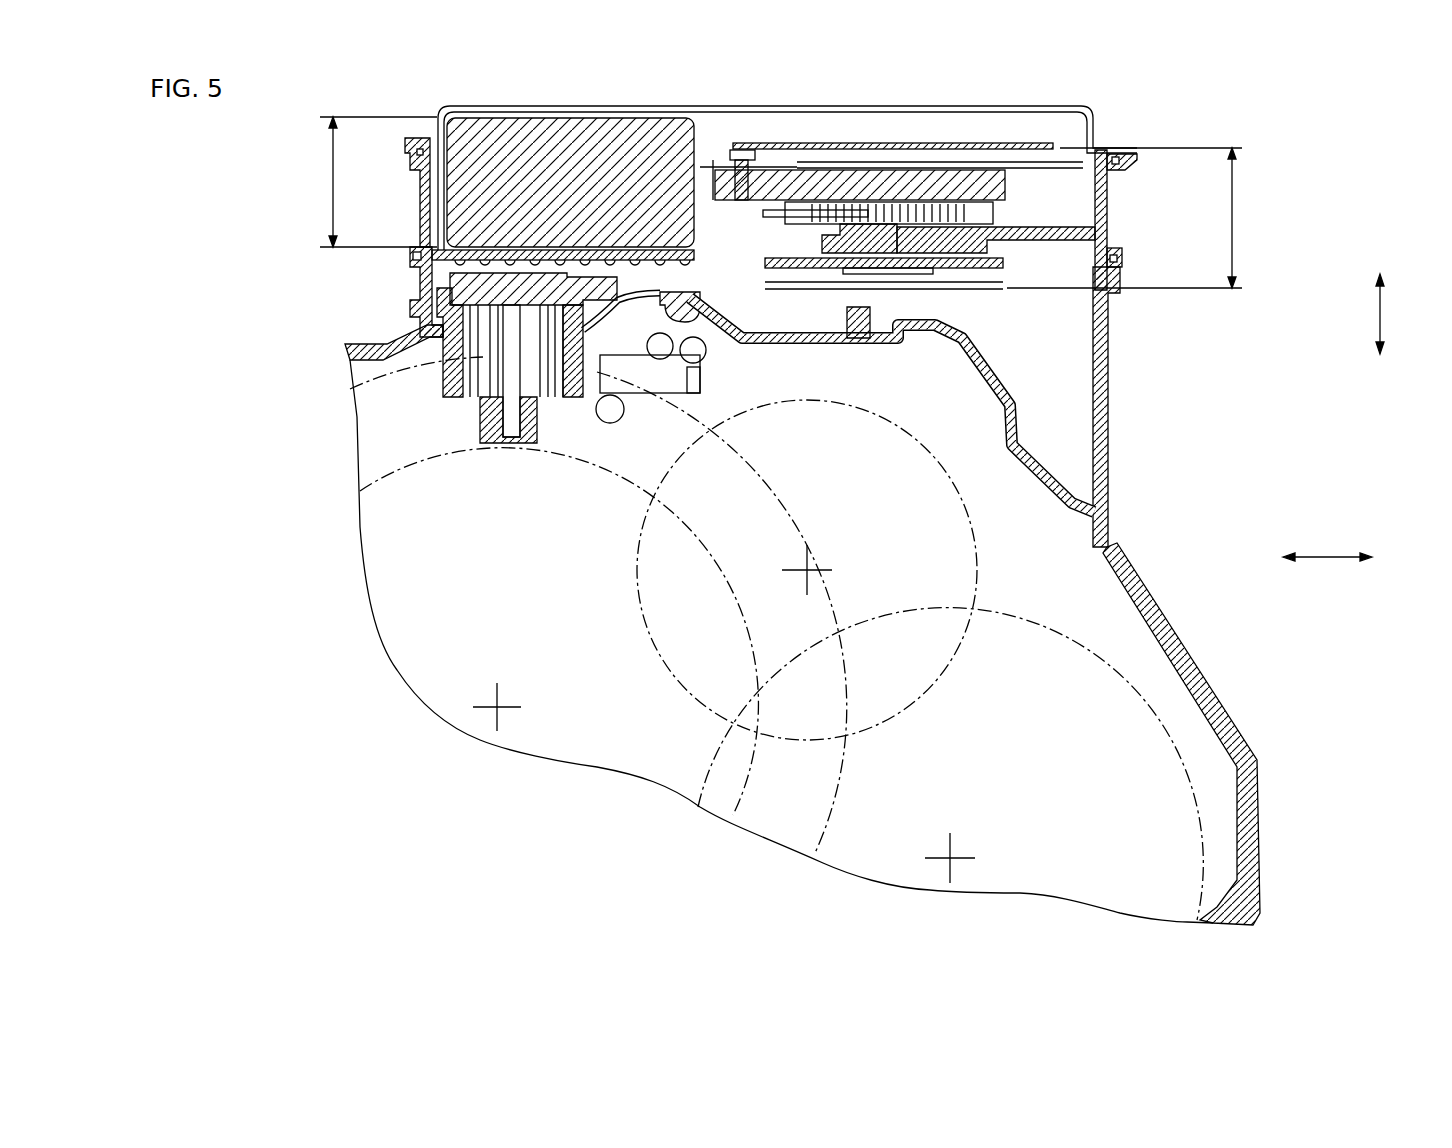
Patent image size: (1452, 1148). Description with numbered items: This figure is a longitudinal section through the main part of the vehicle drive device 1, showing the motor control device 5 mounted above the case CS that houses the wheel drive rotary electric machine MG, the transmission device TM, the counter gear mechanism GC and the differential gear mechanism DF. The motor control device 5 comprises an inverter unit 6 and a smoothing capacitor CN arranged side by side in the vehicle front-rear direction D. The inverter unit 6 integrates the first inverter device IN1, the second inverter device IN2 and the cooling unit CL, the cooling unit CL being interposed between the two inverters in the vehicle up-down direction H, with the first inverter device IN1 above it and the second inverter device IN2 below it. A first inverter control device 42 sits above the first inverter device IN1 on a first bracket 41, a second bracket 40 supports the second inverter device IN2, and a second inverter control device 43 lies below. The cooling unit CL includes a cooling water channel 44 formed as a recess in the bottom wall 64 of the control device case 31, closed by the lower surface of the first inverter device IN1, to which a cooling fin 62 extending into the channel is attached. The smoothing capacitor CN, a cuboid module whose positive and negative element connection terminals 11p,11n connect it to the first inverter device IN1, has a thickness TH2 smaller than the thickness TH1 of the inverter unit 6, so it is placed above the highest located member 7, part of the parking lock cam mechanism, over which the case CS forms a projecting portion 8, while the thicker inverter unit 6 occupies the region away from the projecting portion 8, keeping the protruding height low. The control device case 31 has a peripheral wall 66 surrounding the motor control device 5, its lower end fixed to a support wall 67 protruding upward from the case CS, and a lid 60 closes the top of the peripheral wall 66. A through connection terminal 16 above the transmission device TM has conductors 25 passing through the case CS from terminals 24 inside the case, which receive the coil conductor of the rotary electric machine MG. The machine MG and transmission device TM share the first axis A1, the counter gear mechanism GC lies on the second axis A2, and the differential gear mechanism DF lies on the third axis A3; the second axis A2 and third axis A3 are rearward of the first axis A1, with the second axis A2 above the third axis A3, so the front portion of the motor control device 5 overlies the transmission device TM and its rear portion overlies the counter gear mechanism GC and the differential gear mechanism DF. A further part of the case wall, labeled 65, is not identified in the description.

The vehicle drive device 1 is at (1128, 120).
The motor control device 5 is at (735, 108).
The inverter unit 6 is at (968, 138).
The highest located member 7 is at (712, 377).
The projecting portion 8 is at (668, 292).
The positive and negative element connection terminals 11p,11n is at (713, 162).
The through connection terminal 16 is at (447, 277).
The terminals 24 is at (516, 443).
The conductors 25 is at (557, 323).
The control device case 31 is at (1108, 203).
The second bracket 40 is at (1003, 270).
The first bracket 41 is at (1037, 167).
The first inverter control device 42 is at (908, 143).
The second inverter control device 43 is at (815, 283).
The cooling water channel 44 is at (833, 238).
The lid 60 is at (1067, 110).
The cooling fin 62 is at (993, 213).
The bottom wall 64 is at (627, 262).
The partition wall 65 is at (737, 260).
The peripheral wall 66 is at (418, 197).
The support wall 67 is at (413, 300).
The smoothing capacitor CN is at (547, 118).
The first inverter device IN1 is at (770, 177).
The second inverter device IN2 is at (897, 270).
The cooling unit CL is at (912, 242).
The wheel drive rotary electric machine MG is at (352, 372).
The transmission device TM is at (375, 480).
The counter gear mechanism GC is at (910, 437).
The differential gear mechanism DF is at (1025, 605).
The case CS is at (1197, 637).
The first axis A1 is at (497, 707).
The second axis A2 is at (807, 570).
The third axis A3 is at (950, 858).
The thickness of the inverter unit TH1 is at (1238, 222).
The thickness of the smoothing capacitor TH2 is at (333, 180).
The vehicle up-down direction H is at (1383, 315).
The vehicle front-rear direction D is at (1331, 549).